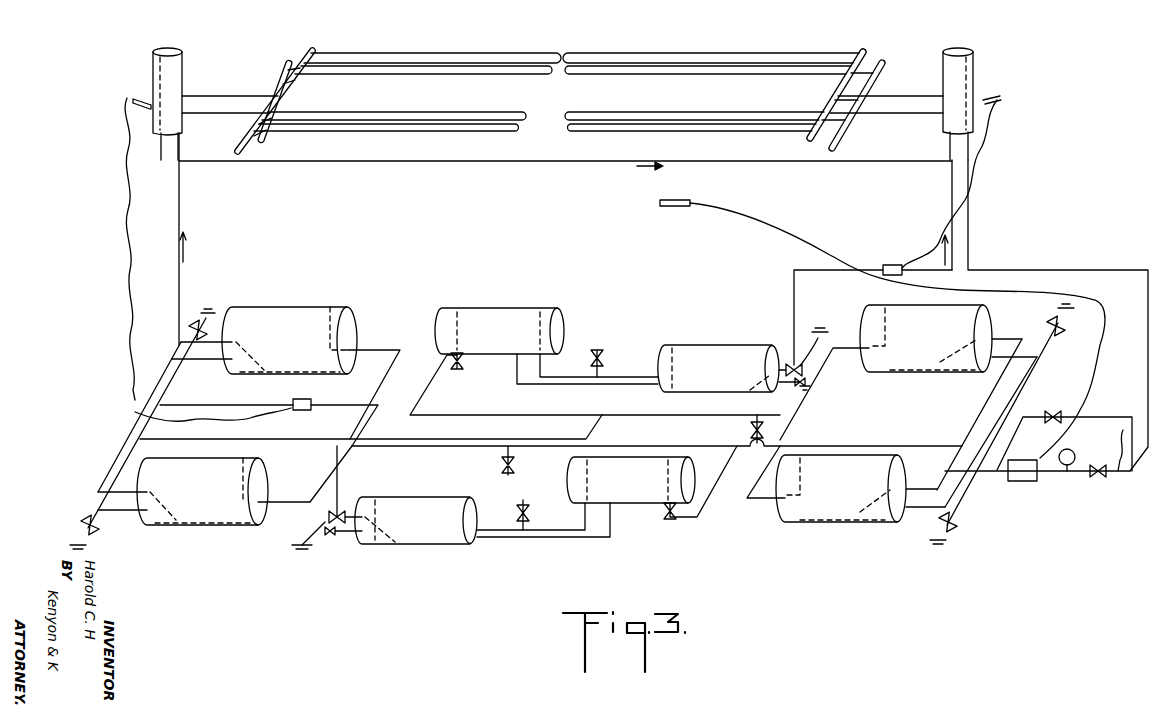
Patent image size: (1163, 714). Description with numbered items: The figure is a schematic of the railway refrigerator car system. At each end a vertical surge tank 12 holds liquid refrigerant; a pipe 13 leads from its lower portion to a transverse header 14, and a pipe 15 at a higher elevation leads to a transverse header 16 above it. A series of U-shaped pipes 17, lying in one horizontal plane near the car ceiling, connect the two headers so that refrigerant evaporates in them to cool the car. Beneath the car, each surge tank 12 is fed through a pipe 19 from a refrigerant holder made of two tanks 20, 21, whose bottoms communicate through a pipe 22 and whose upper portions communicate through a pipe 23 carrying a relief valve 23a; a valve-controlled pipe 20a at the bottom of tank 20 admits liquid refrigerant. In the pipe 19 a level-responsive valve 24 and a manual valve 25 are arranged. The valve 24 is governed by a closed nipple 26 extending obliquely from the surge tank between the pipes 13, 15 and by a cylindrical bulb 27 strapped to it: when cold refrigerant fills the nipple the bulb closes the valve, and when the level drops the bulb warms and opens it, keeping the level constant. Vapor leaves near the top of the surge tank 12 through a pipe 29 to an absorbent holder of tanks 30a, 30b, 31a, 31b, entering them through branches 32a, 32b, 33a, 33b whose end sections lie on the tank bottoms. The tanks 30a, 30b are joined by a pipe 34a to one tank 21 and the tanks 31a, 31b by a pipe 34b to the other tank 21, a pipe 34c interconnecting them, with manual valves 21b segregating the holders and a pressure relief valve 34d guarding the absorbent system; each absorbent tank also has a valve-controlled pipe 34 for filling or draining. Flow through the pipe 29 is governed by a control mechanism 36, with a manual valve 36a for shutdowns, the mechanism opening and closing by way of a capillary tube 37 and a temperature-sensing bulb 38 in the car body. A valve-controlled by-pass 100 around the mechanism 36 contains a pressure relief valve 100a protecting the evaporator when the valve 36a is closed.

The surge tank 12 is at (182, 72).
The pipe 13 is at (200, 113).
The transverse header 14 is at (282, 76).
The pipe 15 is at (200, 96).
The transverse header 16 is at (297, 92).
The U-shaped pipes 17 is at (440, 78).
The pipe 19 is at (180, 188).
The tank 20 is at (703, 345).
The valve-controlled pipe 20a is at (820, 332).
The tank 21 is at (493, 308).
The manually operable valves 21b is at (463, 362).
The pipe 22 is at (560, 384).
The pipe 23 is at (605, 376).
The relief valve 23a is at (597, 350).
The valve 24 is at (890, 265).
The manual valve 25 is at (790, 366).
The closed nipple 26 is at (144, 106).
The cylindrical bulb 27 is at (136, 100).
The pipe 29 is at (478, 162).
The tank 30a is at (910, 350).
The tank 30b is at (836, 505).
The tank 31a is at (262, 307).
The tank 31b is at (204, 525).
The branch 32a is at (992, 339).
The branch 32b is at (938, 525).
The branch 33a is at (130, 412).
The branch 33b is at (130, 440).
The valve-controlled pipe 34 is at (160, 380).
The pipe 34a is at (795, 415).
The pipe 34b is at (416, 446).
The pipe 34c is at (590, 430).
The pressure relief valve 34d is at (750, 430).
The control mechanism 36 is at (1020, 481).
The manual valve 36a is at (1068, 480).
The capillary tube 37 is at (1096, 364).
The cylindrical bulb 38 is at (668, 206).
The valve-controlled by-pass 100 is at (1098, 478).
The pressure relief valve 100a is at (1053, 417).